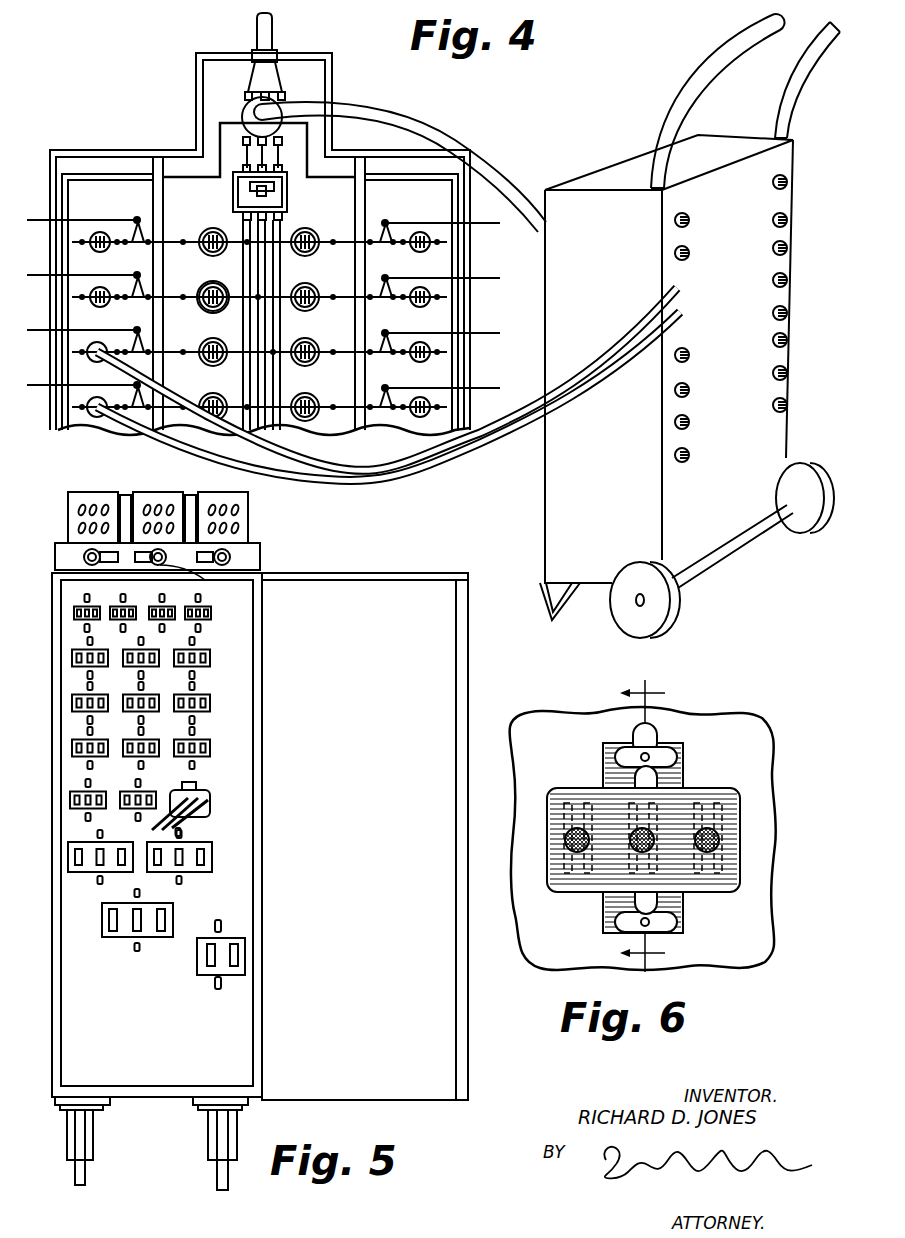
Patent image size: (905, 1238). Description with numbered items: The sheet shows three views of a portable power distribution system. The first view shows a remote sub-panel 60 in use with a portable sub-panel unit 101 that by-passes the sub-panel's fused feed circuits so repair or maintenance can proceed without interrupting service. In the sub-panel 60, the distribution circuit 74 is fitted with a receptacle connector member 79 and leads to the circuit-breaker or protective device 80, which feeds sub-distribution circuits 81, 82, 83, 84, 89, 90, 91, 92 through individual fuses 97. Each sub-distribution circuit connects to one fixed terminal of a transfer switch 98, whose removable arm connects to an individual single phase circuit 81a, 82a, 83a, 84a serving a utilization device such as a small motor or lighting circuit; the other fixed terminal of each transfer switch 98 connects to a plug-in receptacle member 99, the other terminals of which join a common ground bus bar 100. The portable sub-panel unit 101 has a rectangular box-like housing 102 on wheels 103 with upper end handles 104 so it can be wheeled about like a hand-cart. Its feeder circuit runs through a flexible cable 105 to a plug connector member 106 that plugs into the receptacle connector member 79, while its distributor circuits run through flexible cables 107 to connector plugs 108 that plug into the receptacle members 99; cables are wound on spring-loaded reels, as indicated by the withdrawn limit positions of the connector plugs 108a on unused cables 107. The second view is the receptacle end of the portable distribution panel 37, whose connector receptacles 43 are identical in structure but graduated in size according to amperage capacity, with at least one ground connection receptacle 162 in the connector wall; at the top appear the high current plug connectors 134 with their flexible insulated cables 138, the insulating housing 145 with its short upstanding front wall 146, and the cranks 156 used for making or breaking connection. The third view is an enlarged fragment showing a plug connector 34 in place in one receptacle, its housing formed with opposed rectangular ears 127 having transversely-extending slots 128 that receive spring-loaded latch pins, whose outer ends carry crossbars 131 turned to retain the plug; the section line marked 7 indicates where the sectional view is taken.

In FIG. 4, the remote sub-panel 60 is at (470, 271).
In FIG. 4, the common ground bus bar 100 is at (77, 172).
In FIG. 4, the individual single phase circuit 81a is at (32, 220).
In FIG. 4, the individual single phase circuit 82a is at (28, 275).
In FIG. 4, the individual single phase circuit 83a is at (33, 320).
In FIG. 4, the individual single phase circuit 84a is at (27, 385).
In FIG. 4, the transfer switch 98 is at (138, 220).
In FIG. 4, the plug-in receptacle member 99 is at (100, 252).
In FIG. 4, the connector plug 108 is at (95, 361).
In FIG. 4, the sub-distribution circuit 81 is at (185, 240).
In FIG. 4, the sub-distribution circuit 82 is at (186, 293).
In FIG. 4, the sub-distribution circuit 83 is at (184, 348).
In FIG. 4, the sub-distribution circuit 84 is at (184, 404).
In FIG. 4, the individual fuse 97 is at (206, 262).
In FIG. 4, the sub-distribution circuit 89 is at (342, 246).
In FIG. 4, the sub-distribution circuit 90 is at (342, 301).
In FIG. 4, the sub-distribution circuit 91 is at (342, 356).
In FIG. 4, the sub-distribution circuit 92 is at (340, 411).
In FIG. 4, the distribution circuit 74 is at (285, 82).
In FIG. 4, the receptacle connector member 79 is at (245, 95).
In FIG. 4, the plug connector member 106 is at (245, 118).
In FIG. 4, the circuit-breaker or protective device 80 is at (288, 190).
In FIG. 4, the flexible cable 105 is at (457, 151).
In FIG. 4, the flexible cable 107 is at (337, 468).
In FIG. 4, the portable sub-panel unit 101 is at (560, 468).
In FIG. 4, the upper end handle 104 is at (703, 67).
In FIG. 4, the connector plug 108a is at (695, 238).
In FIG. 4, the wheel 103 is at (806, 465).
In FIG. 4, the box-like housing 102 is at (712, 520).
In FIG. 5, the portable distribution panel 37 is at (56, 746).
In FIG. 5, the high current plug connector 134 is at (108, 494).
In FIG. 5, the insulating housing 145 is at (125, 496).
In FIG. 5, the flexible insulated cable 138 is at (188, 488).
In FIG. 5, the front wall 146 is at (246, 562).
In FIG. 5, the crank 156 is at (167, 565).
In FIG. 5, the connector receptacle 43 is at (118, 604).
In FIG. 5, the ground connection receptacle 162 is at (197, 952).
In FIG. 6, the section line 7- 7 is at (656, 826).
In FIG. 6, the rectangular ear 127 is at (604, 772).
In FIG. 6, the crossbar 131 is at (666, 752).
In FIG. 6, the transversely-extending slot 128 is at (684, 776).
In FIG. 6, the plug connector 34 is at (740, 801).